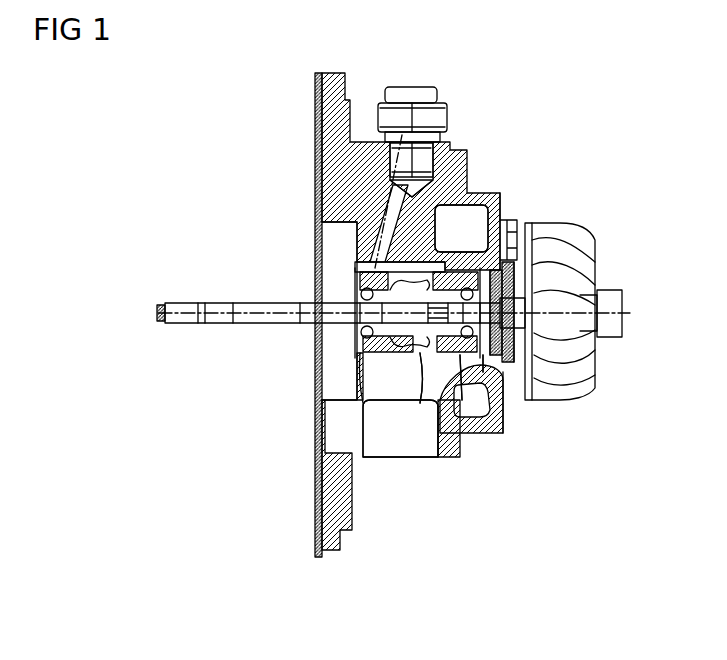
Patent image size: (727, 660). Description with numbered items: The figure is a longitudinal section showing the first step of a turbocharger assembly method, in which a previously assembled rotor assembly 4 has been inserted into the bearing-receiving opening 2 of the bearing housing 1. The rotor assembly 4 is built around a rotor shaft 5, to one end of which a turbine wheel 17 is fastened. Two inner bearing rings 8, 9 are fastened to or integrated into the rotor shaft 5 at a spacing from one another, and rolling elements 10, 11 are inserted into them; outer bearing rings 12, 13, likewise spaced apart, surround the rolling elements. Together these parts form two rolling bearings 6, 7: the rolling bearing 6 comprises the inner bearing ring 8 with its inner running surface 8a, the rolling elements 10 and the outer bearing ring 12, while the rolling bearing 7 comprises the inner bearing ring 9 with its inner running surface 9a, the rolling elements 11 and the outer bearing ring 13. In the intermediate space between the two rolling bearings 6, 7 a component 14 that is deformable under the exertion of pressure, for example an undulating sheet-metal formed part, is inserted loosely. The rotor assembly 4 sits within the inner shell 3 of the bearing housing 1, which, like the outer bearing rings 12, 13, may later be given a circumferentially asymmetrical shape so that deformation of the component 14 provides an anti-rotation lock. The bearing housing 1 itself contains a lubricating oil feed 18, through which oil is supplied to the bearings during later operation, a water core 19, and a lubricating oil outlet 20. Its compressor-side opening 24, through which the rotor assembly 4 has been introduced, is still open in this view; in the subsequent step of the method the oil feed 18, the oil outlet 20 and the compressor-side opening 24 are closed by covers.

The bearing housing 1 is at (320, 122).
The bearing-receiving opening 2 is at (500, 368).
The inner shell 3 is at (358, 286).
The rotor assembly 4 is at (549, 197).
The rotor shaft 5 is at (188, 303).
The rolling bearing 6 is at (513, 532).
The rolling bearing 7 is at (240, 332).
The inner bearing ring 8 is at (478, 355).
The inner running surface 8a is at (458, 372).
The inner bearing ring 9 is at (372, 338).
The inner running surface 9a is at (362, 328).
The rolling elements 10 is at (481, 355).
The rolling elements 11 is at (382, 350).
The outer bearing ring 12 is at (512, 228).
The outer bearing ring 13 is at (396, 358).
The deformable component 14 is at (420, 362).
The turbine wheel 17 is at (570, 245).
The lubricating oil feed 18 is at (390, 213).
The water core 19 is at (472, 215).
The lubricating oil outlet 20 is at (378, 442).
The compressor-side opening 24 is at (335, 230).